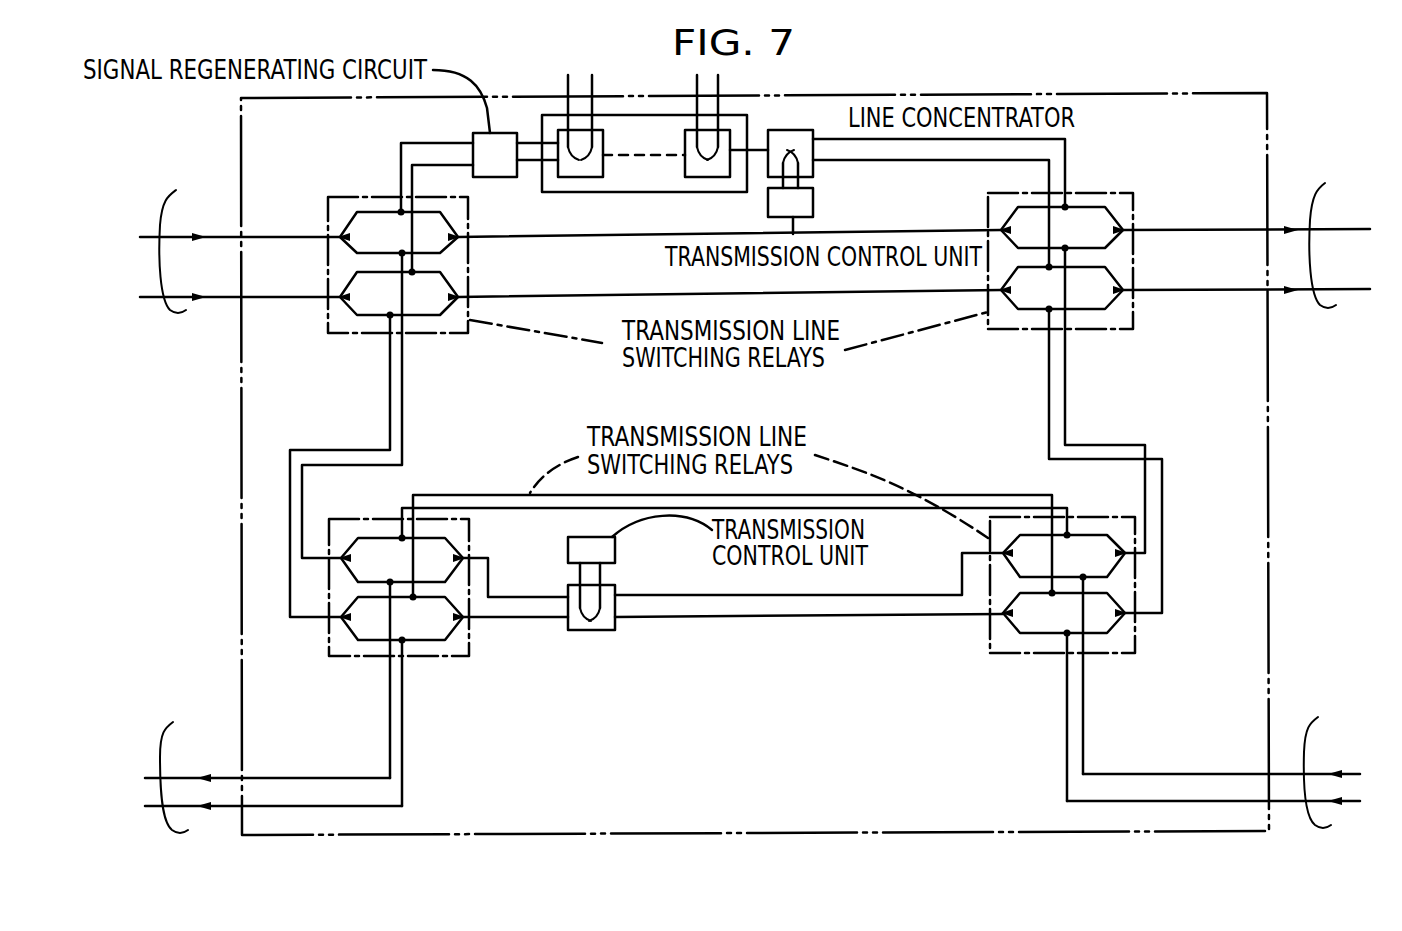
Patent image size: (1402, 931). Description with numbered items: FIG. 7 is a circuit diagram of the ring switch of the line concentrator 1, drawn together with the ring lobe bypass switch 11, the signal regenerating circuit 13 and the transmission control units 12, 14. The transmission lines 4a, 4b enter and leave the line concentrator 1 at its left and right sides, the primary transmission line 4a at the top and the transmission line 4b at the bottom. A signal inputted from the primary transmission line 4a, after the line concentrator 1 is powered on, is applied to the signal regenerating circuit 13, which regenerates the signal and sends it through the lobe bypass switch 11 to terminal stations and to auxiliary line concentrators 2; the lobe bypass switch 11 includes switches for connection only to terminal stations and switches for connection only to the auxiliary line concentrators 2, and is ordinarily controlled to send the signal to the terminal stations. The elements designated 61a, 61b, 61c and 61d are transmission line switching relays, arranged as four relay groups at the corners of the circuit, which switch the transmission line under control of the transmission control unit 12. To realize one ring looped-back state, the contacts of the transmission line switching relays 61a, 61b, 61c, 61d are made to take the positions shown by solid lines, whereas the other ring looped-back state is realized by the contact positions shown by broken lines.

The line concentrator 1 is at (1267, 118).
The auxiliary line concentrator 2 is at (685, 143).
The lobe bypass switch 11 is at (647, 192).
The transmission control unit 12 is at (615, 548).
The signal regenerating circuit 13 is at (473, 139).
The transmission control unit 14 is at (815, 203).
The transmission line switching relay 61a is at (341, 197).
The transmission line switching relay 61b is at (1113, 193).
The transmission line switching relay 61c is at (343, 657).
The transmission line switching relay 61d is at (1127, 655).
The primary transmission line 4a is at (745, 233).
The transmission line 4b is at (742, 758).